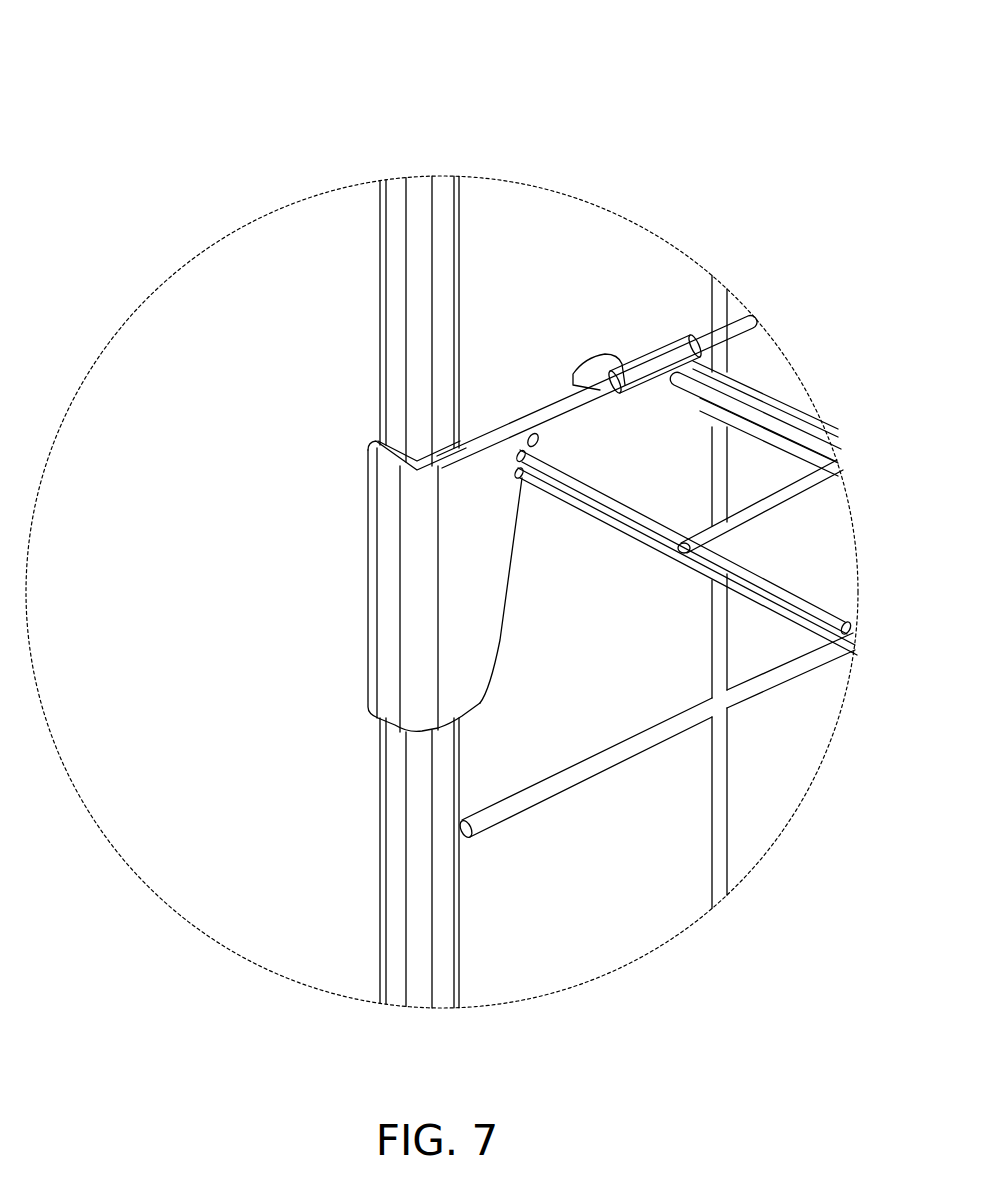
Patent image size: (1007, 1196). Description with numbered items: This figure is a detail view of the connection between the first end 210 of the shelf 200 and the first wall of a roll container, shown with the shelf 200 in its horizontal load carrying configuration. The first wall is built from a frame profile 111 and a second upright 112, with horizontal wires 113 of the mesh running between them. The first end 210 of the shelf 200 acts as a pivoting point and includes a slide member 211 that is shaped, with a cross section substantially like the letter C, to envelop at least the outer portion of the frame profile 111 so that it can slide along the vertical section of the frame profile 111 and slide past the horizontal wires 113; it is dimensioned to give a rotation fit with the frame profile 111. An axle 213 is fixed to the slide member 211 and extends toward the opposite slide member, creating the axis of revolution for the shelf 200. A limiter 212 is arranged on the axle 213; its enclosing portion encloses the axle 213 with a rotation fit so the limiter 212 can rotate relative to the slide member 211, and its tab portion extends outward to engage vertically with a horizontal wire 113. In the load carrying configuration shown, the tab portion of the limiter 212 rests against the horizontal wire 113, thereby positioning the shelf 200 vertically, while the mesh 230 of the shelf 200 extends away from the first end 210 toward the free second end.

The frame profile 111 is at (423, 204).
The second post 112 is at (721, 893).
The horizontal wire 113 is at (563, 788).
The shelf 200 is at (773, 401).
The first end 210 is at (665, 328).
The slide member 211 is at (380, 573).
The limiter 212 is at (598, 374).
The axle 213 is at (752, 334).
The mesh 230 is at (683, 553).